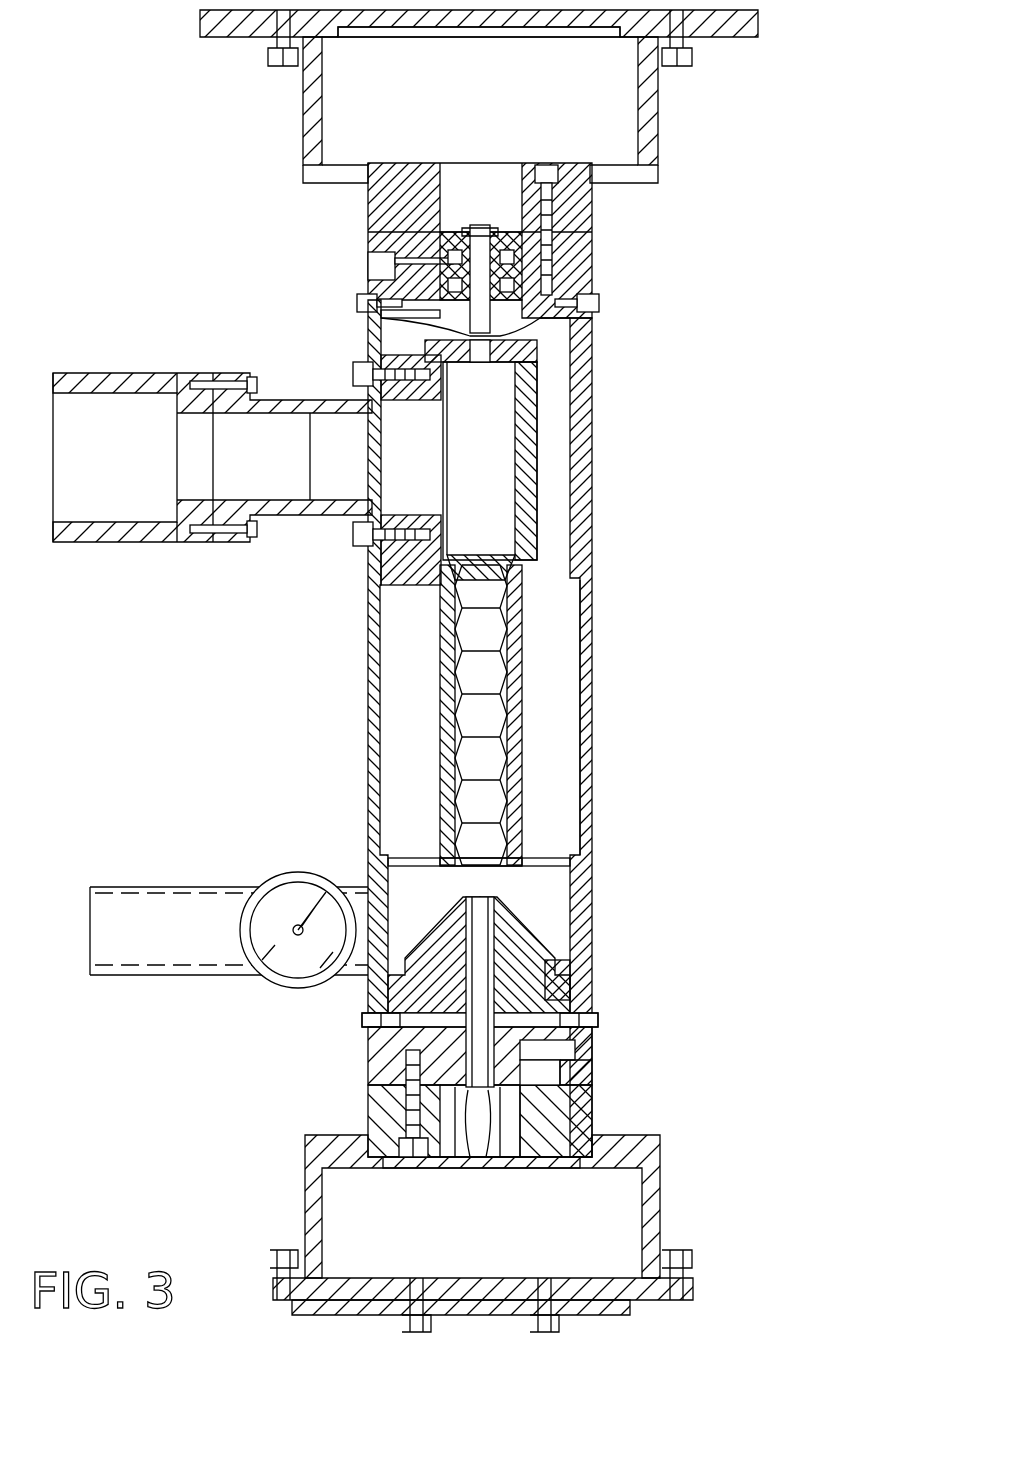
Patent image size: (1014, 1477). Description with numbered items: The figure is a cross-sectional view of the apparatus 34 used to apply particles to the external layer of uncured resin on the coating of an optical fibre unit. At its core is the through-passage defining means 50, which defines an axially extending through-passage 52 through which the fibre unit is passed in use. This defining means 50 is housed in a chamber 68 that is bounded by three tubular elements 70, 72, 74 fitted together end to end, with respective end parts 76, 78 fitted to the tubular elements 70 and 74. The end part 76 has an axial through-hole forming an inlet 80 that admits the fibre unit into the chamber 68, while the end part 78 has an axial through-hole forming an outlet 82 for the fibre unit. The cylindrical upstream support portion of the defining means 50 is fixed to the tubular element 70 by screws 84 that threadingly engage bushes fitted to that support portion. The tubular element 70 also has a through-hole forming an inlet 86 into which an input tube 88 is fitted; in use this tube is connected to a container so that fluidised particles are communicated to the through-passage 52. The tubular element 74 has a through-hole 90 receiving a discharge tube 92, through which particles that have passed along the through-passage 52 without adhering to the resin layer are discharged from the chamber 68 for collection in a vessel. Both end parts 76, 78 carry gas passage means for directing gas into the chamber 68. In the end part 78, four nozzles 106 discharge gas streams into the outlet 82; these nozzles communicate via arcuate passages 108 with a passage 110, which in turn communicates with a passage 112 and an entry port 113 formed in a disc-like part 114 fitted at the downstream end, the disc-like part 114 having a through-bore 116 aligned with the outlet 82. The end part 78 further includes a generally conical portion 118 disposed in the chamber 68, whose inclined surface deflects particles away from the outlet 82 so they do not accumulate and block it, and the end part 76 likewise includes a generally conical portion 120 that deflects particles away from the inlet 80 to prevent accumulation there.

The apparatus 34 is at (628, 697).
The through-passage defining means 50 is at (534, 620).
The through-passage 52 is at (510, 514).
The chamber 68 is at (565, 780).
The tubular element 70 is at (594, 394).
The tubular element 72 is at (370, 702).
The tubular element 74 is at (596, 958).
The end part 76 is at (594, 272).
The end part 78 is at (562, 1000).
The inlet 80 is at (482, 226).
The outlet 82 is at (485, 922).
The screws 84 is at (368, 378).
The inlet 86 is at (367, 498).
The input tube 88 is at (347, 407).
The through-hole 90 is at (370, 882).
The discharge tube 92 is at (117, 976).
The nozzles 106 is at (475, 950).
The arcuate passages 108 is at (545, 925).
The passage 110 is at (562, 1042).
The passage 112 is at (590, 1068).
The entry port 113 is at (600, 1088).
The disc-like part 114 is at (466, 1100).
The through-bore 116 is at (488, 1100).
The conical portion 118 is at (380, 860).
The conical portion 120 is at (440, 332).